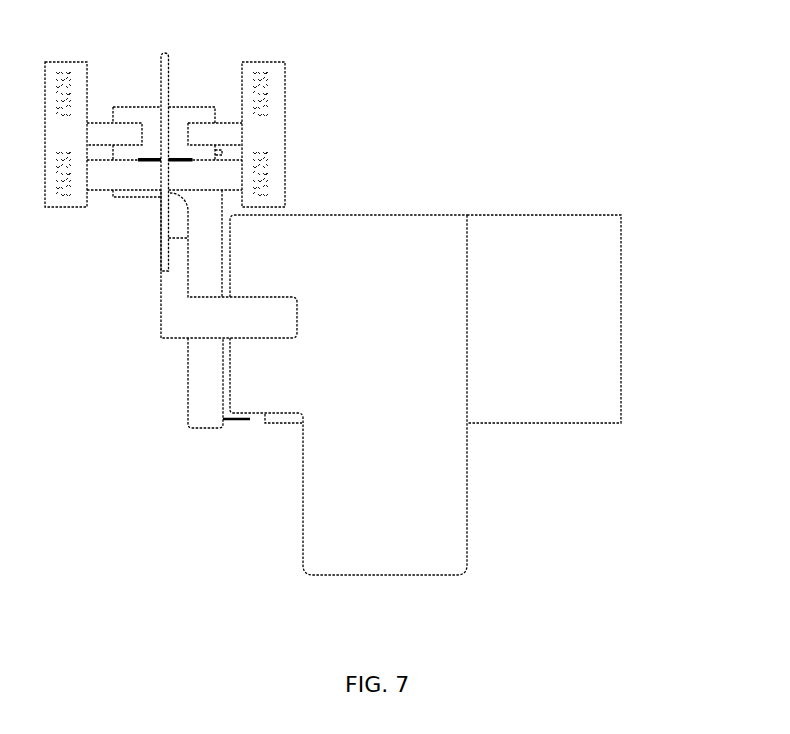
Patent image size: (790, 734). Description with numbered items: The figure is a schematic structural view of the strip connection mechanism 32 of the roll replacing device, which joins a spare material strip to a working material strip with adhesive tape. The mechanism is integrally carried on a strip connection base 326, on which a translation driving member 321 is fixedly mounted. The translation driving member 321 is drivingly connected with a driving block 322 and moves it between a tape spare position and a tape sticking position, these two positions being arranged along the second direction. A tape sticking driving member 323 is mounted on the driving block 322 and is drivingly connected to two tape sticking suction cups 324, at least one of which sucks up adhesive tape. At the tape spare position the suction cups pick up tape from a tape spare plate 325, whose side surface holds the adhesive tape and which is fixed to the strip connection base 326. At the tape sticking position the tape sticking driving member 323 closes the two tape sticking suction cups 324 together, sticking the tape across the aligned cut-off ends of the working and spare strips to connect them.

The strip connection mechanism 32 is at (515, 31).
The translation driving member 321 is at (592, 320).
The driving block 322 is at (197, 267).
The tape sticking driving member 323 is at (190, 107).
The tape sticking suction cups 324 is at (62, 62).
The tape spare plate 325 is at (165, 53).
The strip connection base 326 is at (457, 508).